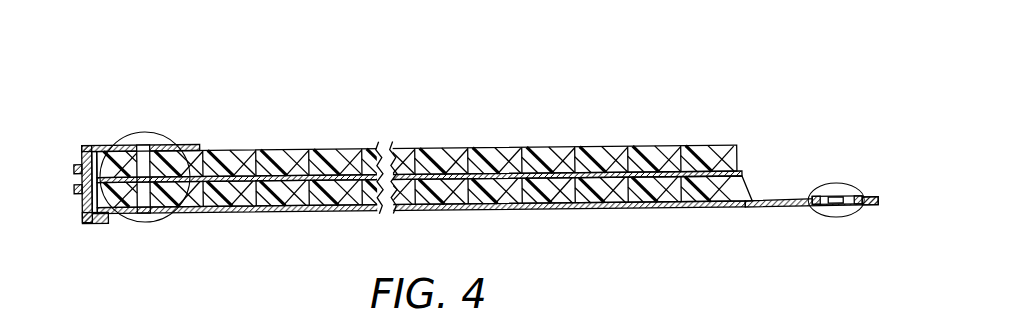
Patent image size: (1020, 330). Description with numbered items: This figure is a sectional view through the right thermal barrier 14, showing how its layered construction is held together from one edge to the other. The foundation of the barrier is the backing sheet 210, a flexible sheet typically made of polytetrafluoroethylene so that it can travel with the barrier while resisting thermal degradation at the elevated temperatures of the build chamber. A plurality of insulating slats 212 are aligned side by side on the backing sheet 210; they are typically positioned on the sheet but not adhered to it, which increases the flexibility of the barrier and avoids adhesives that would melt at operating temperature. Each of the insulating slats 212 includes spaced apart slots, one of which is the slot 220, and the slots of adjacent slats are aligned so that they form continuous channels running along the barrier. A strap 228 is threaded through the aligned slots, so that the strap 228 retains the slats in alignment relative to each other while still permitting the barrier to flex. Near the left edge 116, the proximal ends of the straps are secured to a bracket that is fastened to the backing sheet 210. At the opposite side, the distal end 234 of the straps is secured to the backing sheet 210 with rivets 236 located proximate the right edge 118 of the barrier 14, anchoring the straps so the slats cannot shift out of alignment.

The right thermal barrier 14 is at (458, 90).
The left edge 116 is at (88, 213).
The right edge 118 is at (879, 201).
The backing sheet 210 is at (232, 214).
The insulating slats 212 is at (273, 150).
The slot 220 is at (505, 178).
The strap 228 is at (592, 175).
The distal end 234 is at (870, 195).
The rivets 236 is at (833, 190).